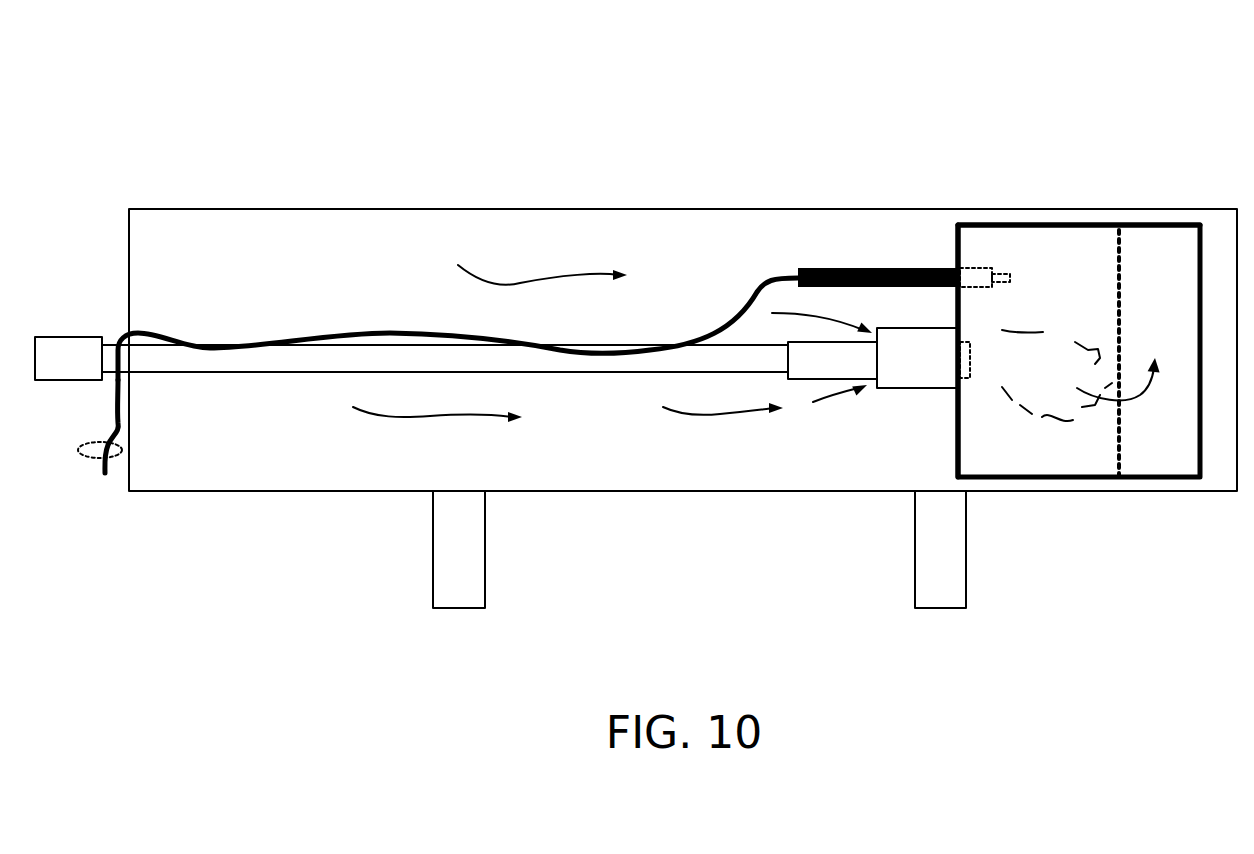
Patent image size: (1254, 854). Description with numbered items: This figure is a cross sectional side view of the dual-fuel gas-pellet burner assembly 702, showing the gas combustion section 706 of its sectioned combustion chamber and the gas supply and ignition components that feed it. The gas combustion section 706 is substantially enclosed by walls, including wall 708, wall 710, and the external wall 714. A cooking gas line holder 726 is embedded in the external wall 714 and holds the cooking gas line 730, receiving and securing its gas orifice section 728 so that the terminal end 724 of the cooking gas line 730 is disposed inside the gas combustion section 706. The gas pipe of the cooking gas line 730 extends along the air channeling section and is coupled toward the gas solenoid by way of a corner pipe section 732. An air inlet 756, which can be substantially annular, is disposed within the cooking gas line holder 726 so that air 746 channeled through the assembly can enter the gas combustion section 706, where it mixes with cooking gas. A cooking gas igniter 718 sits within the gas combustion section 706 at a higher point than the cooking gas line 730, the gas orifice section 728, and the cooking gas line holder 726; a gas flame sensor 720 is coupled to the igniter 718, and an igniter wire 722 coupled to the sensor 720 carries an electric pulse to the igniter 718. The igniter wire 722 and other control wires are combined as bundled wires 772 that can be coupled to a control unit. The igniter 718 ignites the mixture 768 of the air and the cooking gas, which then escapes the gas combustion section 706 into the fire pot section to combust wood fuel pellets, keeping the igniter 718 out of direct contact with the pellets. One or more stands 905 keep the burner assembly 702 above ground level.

The dual-fuel gas-pellet burner assembly 702 is at (155, 118).
The gas combustion section 706 is at (1098, 521).
The wall 708 is at (1095, 225).
The wall 710 is at (1200, 350).
The external wall 714 is at (957, 245).
The cooking gas igniter 718 is at (1010, 277).
The gas flame sensor 720 is at (870, 268).
The igniter wire 722 is at (390, 333).
The terminal end 724 is at (970, 377).
The cooking gas line holder 726 is at (918, 388).
The gas orifice section 728 is at (810, 380).
The cooking gas line 730 is at (518, 372).
The corner pipe section 732 is at (92, 335).
The air 746 is at (507, 282).
The air inlet 756 is at (872, 383).
The mixture of the air and the cooking gas 768 is at (1058, 368).
The bundled wires 772 is at (75, 448).
The stand 905 is at (485, 530).